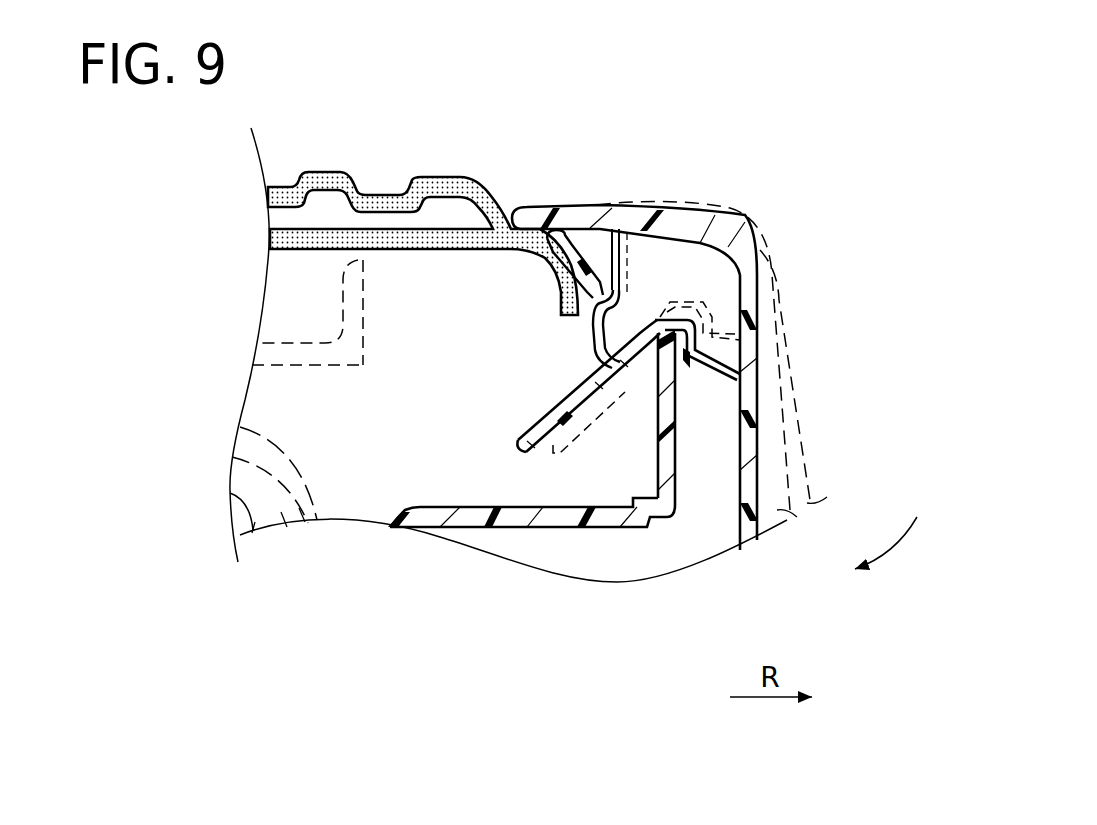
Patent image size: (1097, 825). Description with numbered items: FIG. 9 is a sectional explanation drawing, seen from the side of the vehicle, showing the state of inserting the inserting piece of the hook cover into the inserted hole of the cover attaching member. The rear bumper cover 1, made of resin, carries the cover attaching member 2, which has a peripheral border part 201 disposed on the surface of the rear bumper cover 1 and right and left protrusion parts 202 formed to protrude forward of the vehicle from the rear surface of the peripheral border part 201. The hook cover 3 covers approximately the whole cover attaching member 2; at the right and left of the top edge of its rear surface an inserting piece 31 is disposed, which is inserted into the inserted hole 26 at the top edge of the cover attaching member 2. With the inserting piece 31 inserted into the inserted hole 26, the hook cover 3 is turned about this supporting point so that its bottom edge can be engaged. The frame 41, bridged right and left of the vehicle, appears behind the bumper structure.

The rear bumper cover 1 is at (440, 163).
The cover attaching member 2 is at (627, 537).
The hook cover 3 is at (772, 534).
The inserted hole 26 is at (656, 320).
The inserting piece 31 is at (600, 385).
The frame 41 is at (306, 522).
The peripheral border part 201 is at (672, 453).
The protrusion parts 202 is at (463, 518).